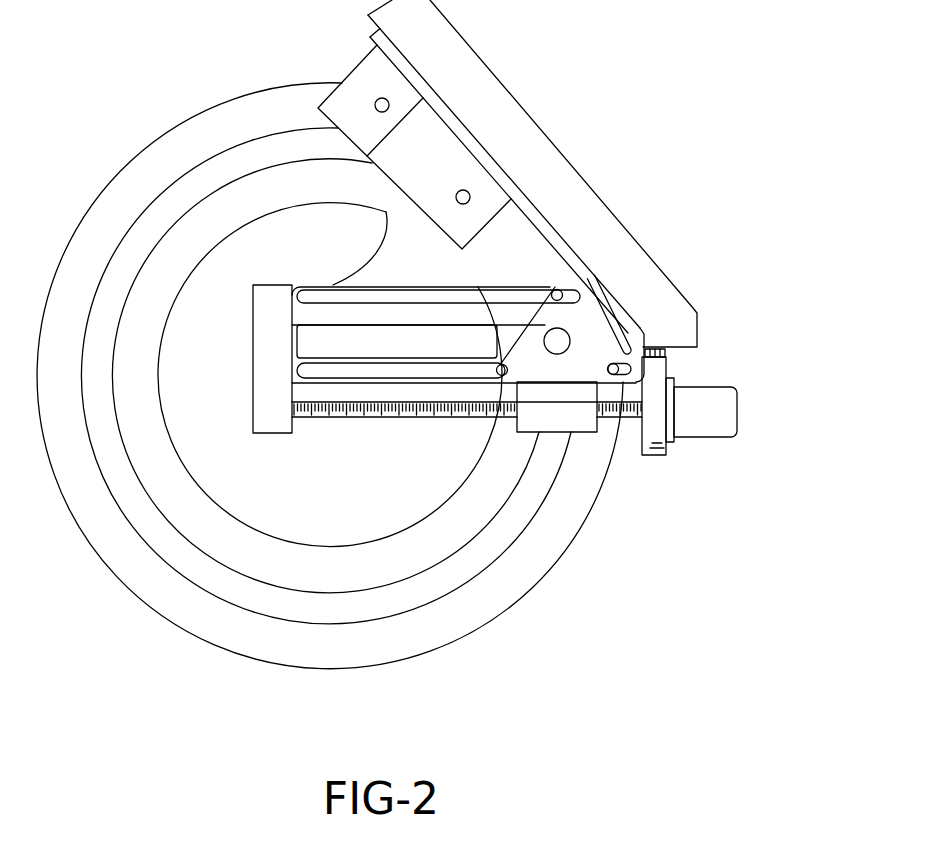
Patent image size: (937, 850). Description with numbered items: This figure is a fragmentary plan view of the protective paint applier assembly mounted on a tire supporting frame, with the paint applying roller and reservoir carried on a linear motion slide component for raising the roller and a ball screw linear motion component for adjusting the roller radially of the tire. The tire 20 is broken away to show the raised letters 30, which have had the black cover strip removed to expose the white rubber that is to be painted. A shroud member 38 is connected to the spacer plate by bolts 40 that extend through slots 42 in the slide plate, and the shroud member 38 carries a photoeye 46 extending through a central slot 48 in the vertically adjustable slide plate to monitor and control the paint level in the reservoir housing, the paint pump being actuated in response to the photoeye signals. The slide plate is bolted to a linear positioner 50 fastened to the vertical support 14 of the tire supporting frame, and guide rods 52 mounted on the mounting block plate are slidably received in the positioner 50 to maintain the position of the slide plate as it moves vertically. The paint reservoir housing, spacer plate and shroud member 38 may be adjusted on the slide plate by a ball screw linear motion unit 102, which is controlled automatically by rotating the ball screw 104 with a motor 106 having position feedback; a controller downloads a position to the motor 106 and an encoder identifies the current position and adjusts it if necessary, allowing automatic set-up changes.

The vertical support 14 is at (543, 168).
The tire 20 is at (372, 652).
The raised letters 30 is at (458, 567).
The shroud member 38 is at (592, 345).
The bolts 40 is at (559, 293).
The slots 42 is at (337, 297).
The photoeye 46 is at (562, 334).
The central slot 48 is at (325, 347).
The linear positioner 50 is at (538, 221).
The guide rods 52 is at (380, 105).
The ball screw linear motion unit 102 is at (547, 420).
The ball screw 104 is at (366, 418).
The motor 106 is at (725, 405).